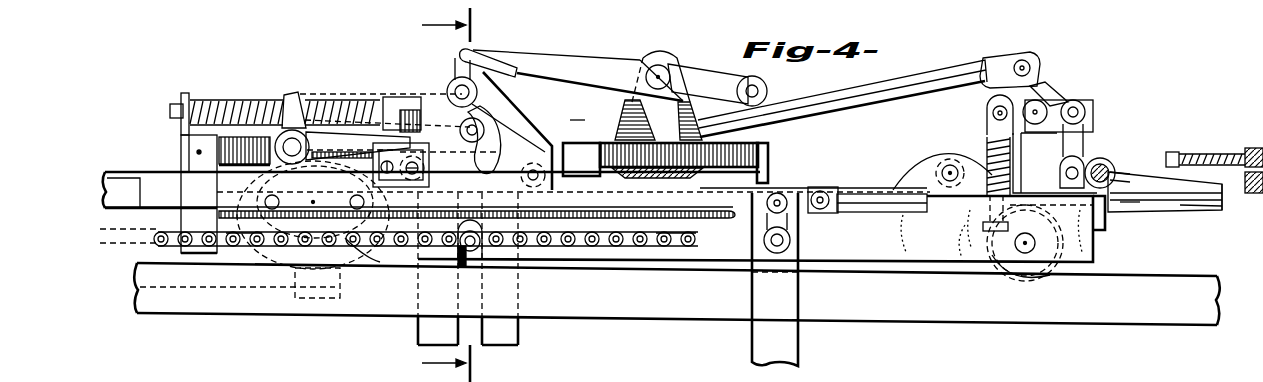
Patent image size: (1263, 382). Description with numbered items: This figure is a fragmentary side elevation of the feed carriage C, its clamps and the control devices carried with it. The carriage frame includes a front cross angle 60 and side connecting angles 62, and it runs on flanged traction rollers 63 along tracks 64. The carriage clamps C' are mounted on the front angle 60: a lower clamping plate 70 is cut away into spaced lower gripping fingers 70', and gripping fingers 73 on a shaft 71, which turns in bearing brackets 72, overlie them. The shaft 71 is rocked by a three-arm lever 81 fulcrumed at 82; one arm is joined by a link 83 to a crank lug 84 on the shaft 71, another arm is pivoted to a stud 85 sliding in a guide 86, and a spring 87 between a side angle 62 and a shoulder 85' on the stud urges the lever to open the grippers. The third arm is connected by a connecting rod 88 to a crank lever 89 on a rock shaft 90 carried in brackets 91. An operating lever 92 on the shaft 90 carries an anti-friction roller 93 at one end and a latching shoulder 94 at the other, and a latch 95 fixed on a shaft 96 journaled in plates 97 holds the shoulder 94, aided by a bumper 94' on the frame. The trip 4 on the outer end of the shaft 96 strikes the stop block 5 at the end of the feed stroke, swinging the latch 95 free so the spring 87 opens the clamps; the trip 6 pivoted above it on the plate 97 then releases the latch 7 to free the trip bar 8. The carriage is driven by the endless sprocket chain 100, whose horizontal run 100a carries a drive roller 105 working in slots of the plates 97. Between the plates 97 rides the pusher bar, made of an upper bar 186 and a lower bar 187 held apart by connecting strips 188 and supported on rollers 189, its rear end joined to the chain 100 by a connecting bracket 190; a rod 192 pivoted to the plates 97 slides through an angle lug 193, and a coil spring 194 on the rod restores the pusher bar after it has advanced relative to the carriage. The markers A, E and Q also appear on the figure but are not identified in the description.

The trip 4 is at (488, 152).
The stop block 5 is at (497, 188).
The trip 6 is at (410, 95).
The latch 7 is at (297, 100).
The trip bar 8 is at (698, 203).
The front cross angle 60 is at (1024, 168).
The side connecting angles 62 is at (755, 229).
The traction rollers 63 is at (312, 270).
The tracks 64 is at (902, 300).
The lower clamping plate 70 is at (1157, 212).
The lower gripping fingers 70' is at (1196, 218).
The shaft 71 is at (1118, 170).
The bearing brackets 72 is at (1122, 176).
The gripping fingers 73 is at (1213, 194).
The three-arm lever 81 is at (1050, 106).
The fulcrum 82 is at (1040, 106).
The link 83 is at (1086, 118).
The crank lug 84 is at (1100, 157).
The stud 85 is at (966, 177).
The shoulder 85' is at (974, 115).
The guide 86 is at (968, 232).
The spring 87 is at (938, 158).
The connecting rod 88 is at (850, 108).
The crank lever 89 is at (686, 108).
The rock shaft 90 is at (662, 72).
The brackets 91 is at (624, 128).
The operating lever 92 is at (580, 62).
The anti-friction roller 93 is at (768, 90).
The latching shoulder 94 is at (512, 50).
The bumper 94' is at (1221, 148).
The latch 95 is at (462, 66).
The rotatable shaft 96 is at (460, 136).
The plates 97 is at (497, 116).
The endless sprocket chain 100 is at (576, 250).
The horizontal run 100a is at (666, 250).
The drive roller 105 is at (456, 250).
The upper bar 186 is at (770, 144).
The lower bar 187 is at (768, 170).
The connecting strips 188 is at (585, 160).
The rollers 189 is at (533, 160).
The connecting bracket 190 is at (197, 152).
The rod 192 is at (242, 100).
The angle lug 193 is at (186, 100).
The coil spring 194 is at (343, 100).
The hanger A is at (744, 206).
The carriage C is at (578, 111).
The carriage clamps C' is at (1131, 214).
The chain section E is at (250, 250).
The nut Q is at (1178, 152).